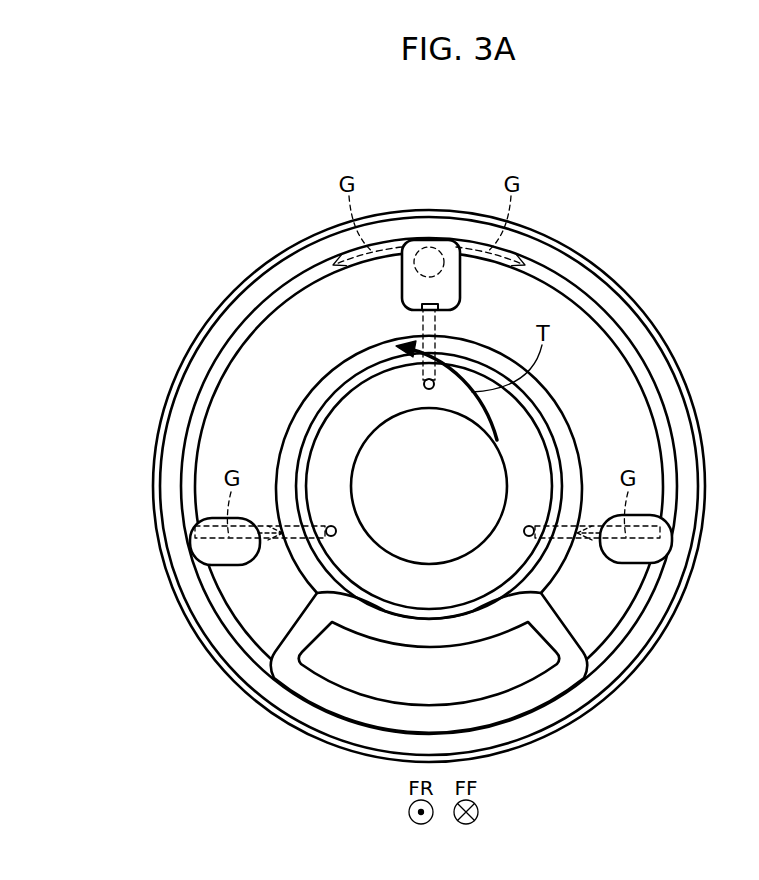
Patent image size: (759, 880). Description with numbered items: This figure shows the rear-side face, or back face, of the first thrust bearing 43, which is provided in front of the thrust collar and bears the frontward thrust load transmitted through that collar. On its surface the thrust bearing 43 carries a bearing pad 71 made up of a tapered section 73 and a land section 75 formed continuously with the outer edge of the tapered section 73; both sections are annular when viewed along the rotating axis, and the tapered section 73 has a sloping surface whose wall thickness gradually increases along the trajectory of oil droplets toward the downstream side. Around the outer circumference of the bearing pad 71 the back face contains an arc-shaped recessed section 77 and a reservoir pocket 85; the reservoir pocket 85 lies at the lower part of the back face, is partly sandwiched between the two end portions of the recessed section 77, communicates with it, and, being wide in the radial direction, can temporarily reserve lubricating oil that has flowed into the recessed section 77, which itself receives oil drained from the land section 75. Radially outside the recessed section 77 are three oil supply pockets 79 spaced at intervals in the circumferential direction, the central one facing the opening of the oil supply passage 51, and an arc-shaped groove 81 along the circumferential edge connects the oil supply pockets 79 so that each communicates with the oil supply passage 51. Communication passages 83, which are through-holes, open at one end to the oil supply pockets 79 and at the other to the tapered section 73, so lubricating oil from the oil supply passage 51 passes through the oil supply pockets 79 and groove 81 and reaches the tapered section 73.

The thrust bearing 43 is at (617, 235).
The oil supply passage 51 is at (430, 246).
The bearing pad 71 is at (308, 486).
The tapered section 73 is at (325, 460).
The land section 75 is at (323, 408).
The recessed section 77 is at (564, 416).
The oil supply pocket 79 is at (404, 292).
The groove 81 is at (258, 315).
The communication passage 83 is at (441, 334).
The reservoir pocket 85 is at (393, 720).